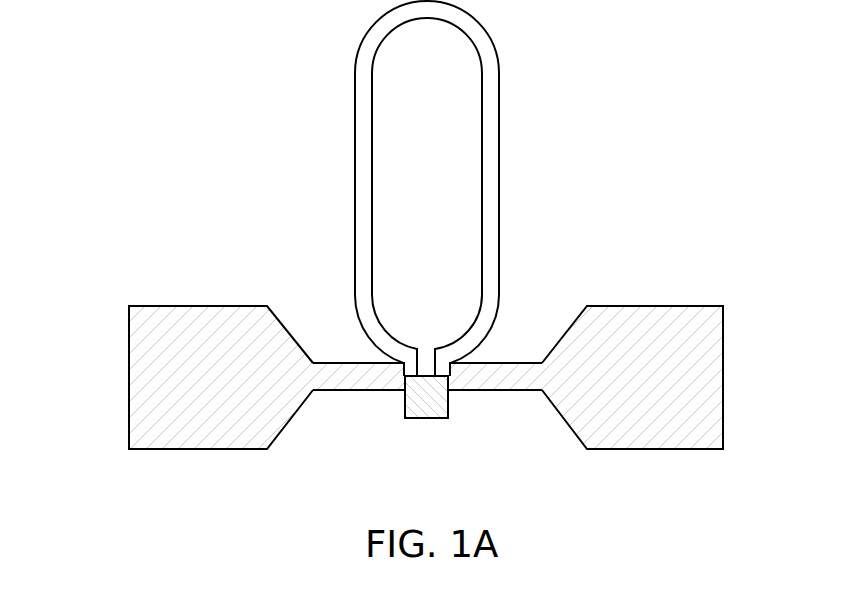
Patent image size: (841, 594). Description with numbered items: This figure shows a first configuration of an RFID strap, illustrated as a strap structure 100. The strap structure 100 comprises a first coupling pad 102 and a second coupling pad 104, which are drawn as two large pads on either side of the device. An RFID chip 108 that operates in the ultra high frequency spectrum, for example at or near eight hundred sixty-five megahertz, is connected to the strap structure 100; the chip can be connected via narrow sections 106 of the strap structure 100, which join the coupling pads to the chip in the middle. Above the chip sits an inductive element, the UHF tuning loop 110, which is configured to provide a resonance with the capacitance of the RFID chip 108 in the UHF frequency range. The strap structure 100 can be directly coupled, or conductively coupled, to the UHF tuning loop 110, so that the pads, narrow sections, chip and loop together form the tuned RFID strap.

The strap structure 100 is at (420, 255).
The first coupling pad 102 is at (210, 450).
The second coupling pad 104 is at (645, 450).
The narrow sections 106 is at (328, 362).
The RFID chip 108 is at (425, 419).
The UHF tuning loop 110 is at (500, 125).